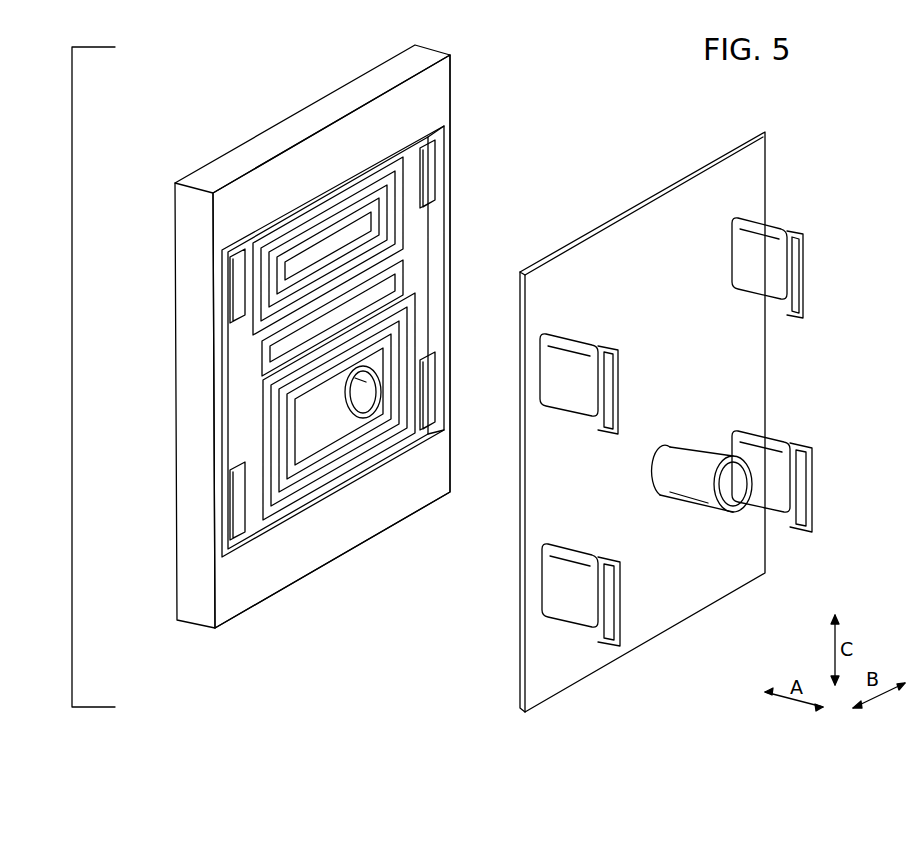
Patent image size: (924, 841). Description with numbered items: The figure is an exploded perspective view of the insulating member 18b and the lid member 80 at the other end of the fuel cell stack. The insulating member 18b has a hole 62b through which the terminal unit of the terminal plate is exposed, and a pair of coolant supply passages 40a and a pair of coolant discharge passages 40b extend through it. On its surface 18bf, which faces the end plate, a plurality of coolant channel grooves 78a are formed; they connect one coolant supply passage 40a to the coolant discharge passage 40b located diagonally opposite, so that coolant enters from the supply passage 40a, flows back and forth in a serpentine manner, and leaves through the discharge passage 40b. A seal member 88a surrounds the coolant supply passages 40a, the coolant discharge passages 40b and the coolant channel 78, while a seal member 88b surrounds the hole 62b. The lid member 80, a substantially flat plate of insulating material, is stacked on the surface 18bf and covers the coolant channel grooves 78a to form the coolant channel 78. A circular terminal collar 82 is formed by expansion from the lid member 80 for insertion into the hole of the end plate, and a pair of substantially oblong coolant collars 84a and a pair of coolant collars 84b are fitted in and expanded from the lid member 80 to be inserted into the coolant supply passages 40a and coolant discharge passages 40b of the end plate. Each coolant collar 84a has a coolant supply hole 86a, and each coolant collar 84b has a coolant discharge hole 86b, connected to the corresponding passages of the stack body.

The insulating member 18b is at (449, 52).
The surface of the insulating member 18bf is at (290, 567).
The seal member 88a is at (432, 126).
The seal member 88b is at (355, 415).
The coolant supply passages 40a is at (428, 178).
The coolant discharge passages 40b is at (430, 391).
The coolant channel 78 is at (406, 272).
The coolant channel grooves 78a is at (392, 298).
The hole 62b is at (365, 398).
The lid member 80 is at (769, 131).
The terminal collar 82 is at (694, 460).
The coolant collars 84a is at (576, 338).
The coolant collars 84b is at (580, 553).
The coolant supply hole 86a is at (612, 392).
The coolant discharge hole 86b is at (612, 605).